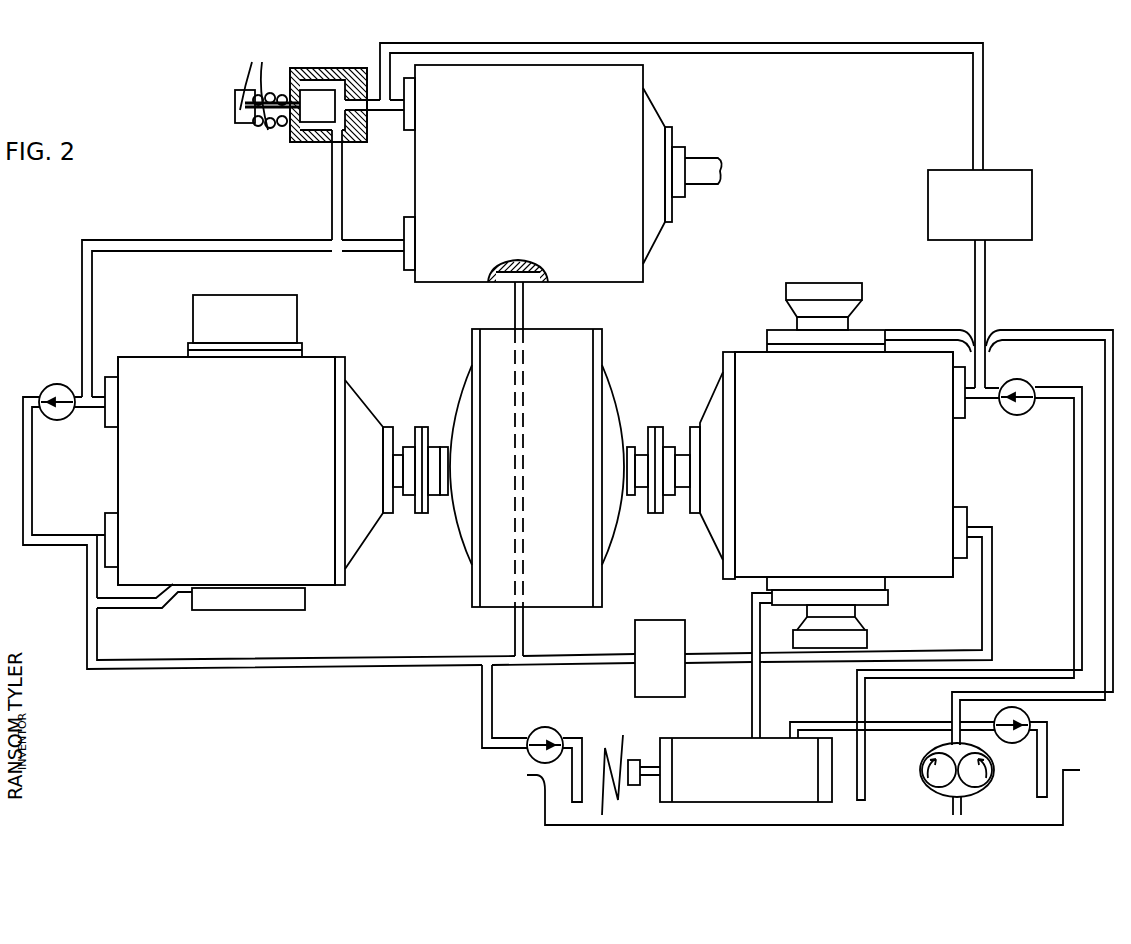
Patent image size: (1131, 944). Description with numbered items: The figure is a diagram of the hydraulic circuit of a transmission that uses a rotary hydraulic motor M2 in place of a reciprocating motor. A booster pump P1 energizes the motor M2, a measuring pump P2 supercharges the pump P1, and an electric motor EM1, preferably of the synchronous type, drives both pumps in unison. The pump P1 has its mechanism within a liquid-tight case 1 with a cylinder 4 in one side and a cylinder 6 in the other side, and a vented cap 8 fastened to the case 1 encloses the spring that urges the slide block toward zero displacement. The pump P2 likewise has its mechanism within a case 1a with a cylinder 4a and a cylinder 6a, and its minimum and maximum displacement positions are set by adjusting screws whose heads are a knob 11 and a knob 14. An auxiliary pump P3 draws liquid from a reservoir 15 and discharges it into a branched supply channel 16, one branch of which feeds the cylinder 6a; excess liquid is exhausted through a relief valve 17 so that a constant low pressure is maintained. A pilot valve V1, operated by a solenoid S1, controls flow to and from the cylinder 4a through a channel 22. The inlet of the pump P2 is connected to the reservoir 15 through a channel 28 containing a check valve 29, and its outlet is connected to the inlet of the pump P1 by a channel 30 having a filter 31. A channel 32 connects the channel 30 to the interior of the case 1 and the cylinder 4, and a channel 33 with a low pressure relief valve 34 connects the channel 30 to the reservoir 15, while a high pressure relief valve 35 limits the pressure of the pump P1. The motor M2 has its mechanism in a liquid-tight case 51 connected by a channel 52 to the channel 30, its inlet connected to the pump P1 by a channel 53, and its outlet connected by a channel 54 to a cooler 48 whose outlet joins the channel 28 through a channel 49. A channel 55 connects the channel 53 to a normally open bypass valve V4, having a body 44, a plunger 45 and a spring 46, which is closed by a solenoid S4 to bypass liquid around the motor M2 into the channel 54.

The case 1 is at (132, 455).
The case 1a is at (942, 455).
The cylinder 4 is at (305, 590).
The cylinder 4a is at (885, 587).
The cylinder 6 is at (302, 357).
The cylinder 6a is at (767, 352).
The vented cap 8 is at (292, 314).
The knob 11 is at (867, 632).
The knob 14 is at (862, 291).
The reservoir 15 is at (530, 776).
The branched supply channel 16 is at (955, 332).
The relief valve 17 is at (1031, 722).
The channel 22 is at (752, 707).
The channel 28 is at (992, 399).
The check valve 29 is at (1020, 414).
The channel 30 is at (87, 565).
The filter 31 is at (650, 665).
The channel 32 is at (159, 608).
The channel 33 is at (486, 707).
The low pressure relief valve 34 is at (549, 733).
The high pressure relief valve 35 is at (55, 389).
The body 44 is at (322, 142).
The plunger 45 is at (309, 114).
The spring 46 is at (264, 124).
The cooler 48 is at (971, 216).
The channel 49 is at (986, 297).
The case 51 is at (525, 283).
The channel 52 is at (515, 311).
The channel 53 is at (125, 253).
The channel 54 is at (830, 54).
The channel 55 is at (332, 208).
The rotary hydraulic motor M2 is at (497, 182).
The booster pump P1 is at (256, 474).
The measuring pump P2 is at (818, 474).
The auxiliary pump P3 is at (919, 798).
The electric motor EM1 is at (516, 474).
The pilot valve V1 is at (732, 783).
The bypass valve V4 is at (311, 68).
The solenoid S1 is at (630, 754).
The solenoid S4 is at (253, 86).